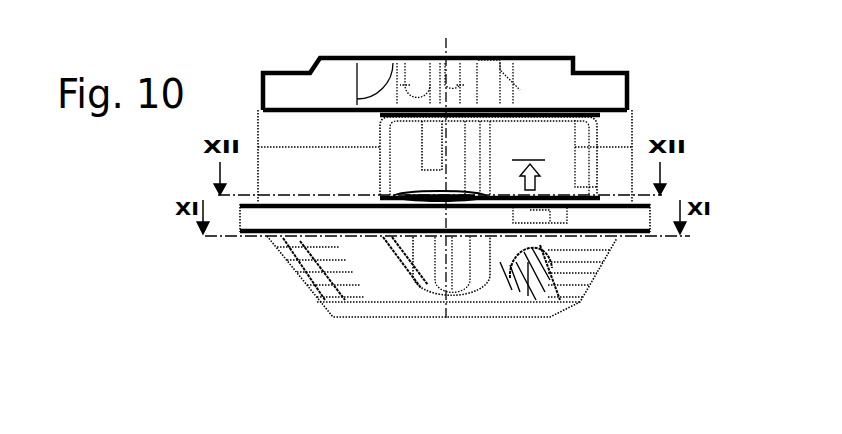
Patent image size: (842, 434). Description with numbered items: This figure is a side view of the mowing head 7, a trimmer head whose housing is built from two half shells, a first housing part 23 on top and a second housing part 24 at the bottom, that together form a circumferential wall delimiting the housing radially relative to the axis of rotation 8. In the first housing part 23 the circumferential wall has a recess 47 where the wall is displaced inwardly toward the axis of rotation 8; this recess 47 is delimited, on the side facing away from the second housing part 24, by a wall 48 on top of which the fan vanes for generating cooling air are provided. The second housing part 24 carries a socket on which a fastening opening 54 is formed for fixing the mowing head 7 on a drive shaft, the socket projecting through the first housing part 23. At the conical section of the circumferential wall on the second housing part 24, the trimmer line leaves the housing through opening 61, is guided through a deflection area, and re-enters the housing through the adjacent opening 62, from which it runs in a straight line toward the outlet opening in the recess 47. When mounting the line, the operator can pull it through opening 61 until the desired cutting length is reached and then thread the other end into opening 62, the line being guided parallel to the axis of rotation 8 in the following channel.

The mowing head 7 is at (650, 62).
The axis of rotation 8 is at (448, 43).
The first housing part 23 is at (618, 122).
The second housing part 24 is at (577, 278).
The recess 47 is at (545, 135).
The wall 48 is at (510, 112).
The fastening opening 54 is at (521, 276).
The opening 61 is at (520, 258).
The opening 62 is at (535, 258).